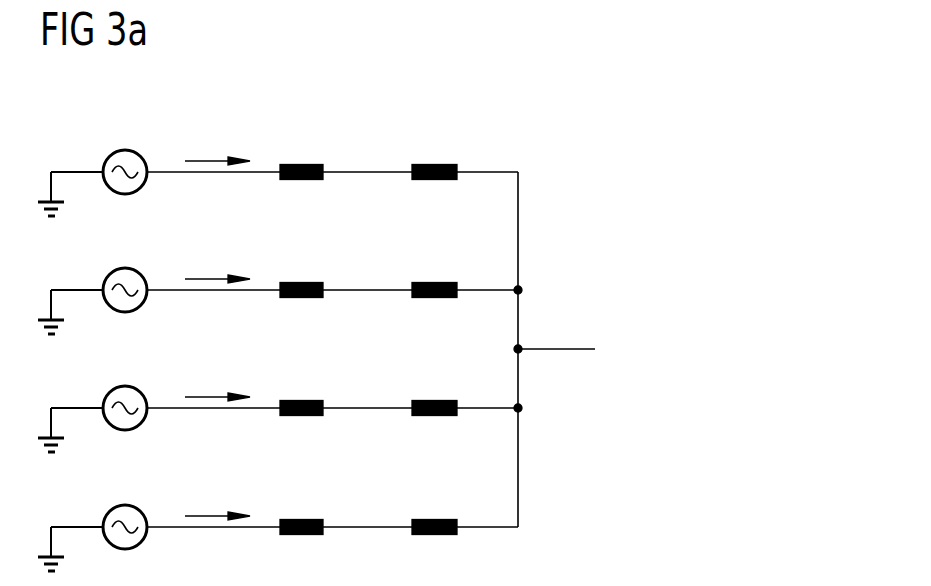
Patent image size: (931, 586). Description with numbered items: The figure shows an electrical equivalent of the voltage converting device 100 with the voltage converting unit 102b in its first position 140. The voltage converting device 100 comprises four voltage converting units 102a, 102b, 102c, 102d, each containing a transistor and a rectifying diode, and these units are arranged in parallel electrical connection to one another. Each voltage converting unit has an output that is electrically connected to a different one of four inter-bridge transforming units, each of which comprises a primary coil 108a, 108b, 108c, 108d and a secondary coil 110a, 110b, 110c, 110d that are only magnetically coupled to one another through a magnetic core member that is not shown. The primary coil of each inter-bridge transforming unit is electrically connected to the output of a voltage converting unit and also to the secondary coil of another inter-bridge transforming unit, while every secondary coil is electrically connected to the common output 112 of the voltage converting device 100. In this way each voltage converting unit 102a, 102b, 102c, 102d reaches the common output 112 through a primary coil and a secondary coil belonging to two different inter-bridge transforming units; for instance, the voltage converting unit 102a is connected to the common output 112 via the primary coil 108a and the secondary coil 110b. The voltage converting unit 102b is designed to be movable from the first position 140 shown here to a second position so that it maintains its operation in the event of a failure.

The voltage converting device 100 is at (509, 86).
The voltage converting unit 102a is at (126, 149).
The voltage converting unit 102b is at (126, 267).
The voltage converting unit 102c is at (126, 385).
The voltage converting unit 102d is at (126, 504).
The primary coil 108a is at (303, 164).
The primary coil 108b is at (303, 282).
The primary coil 108c is at (303, 400).
The primary coil 108d is at (303, 519).
The secondary coil 110a is at (435, 519).
The secondary coil 110b is at (435, 164).
The secondary coil 110c is at (435, 282).
The secondary coil 110d is at (435, 400).
The common output 112 is at (525, 345).
The first position 140 is at (563, 141).